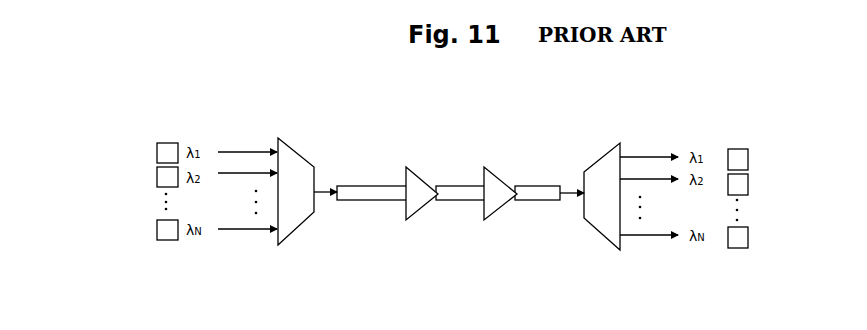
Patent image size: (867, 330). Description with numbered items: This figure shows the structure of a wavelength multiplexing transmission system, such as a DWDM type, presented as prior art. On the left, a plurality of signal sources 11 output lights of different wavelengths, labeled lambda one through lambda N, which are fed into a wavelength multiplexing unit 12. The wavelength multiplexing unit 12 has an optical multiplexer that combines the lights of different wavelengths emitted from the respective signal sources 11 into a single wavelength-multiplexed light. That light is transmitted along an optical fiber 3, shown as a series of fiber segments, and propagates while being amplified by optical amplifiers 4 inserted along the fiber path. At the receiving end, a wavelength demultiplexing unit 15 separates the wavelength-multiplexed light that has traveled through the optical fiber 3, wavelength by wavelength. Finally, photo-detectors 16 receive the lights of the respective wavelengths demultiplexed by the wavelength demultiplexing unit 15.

The signal sources 11 is at (157, 152).
The wavelength multiplexing unit 12 is at (290, 233).
The optical fiber 3 is at (368, 185).
The optical amplifiers 4 is at (417, 213).
The wavelength demultiplexing unit 15 is at (592, 227).
The photo-detectors 16 is at (748, 160).